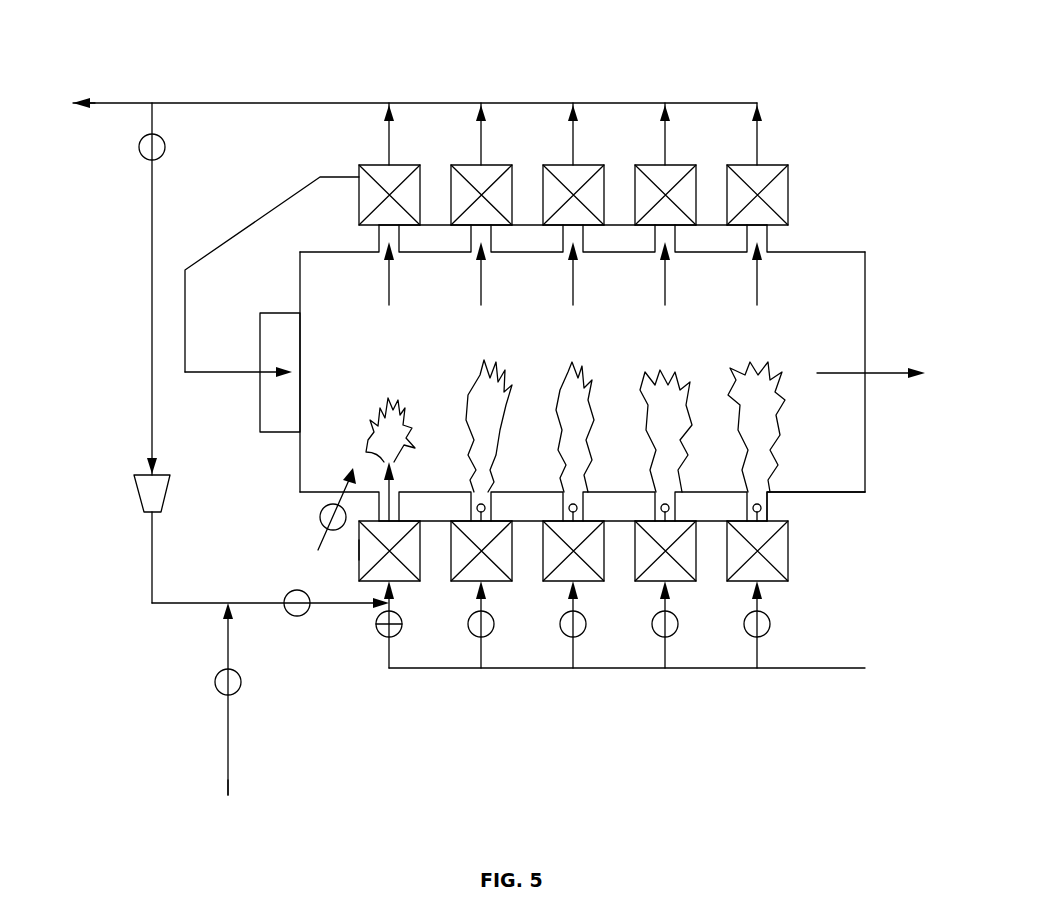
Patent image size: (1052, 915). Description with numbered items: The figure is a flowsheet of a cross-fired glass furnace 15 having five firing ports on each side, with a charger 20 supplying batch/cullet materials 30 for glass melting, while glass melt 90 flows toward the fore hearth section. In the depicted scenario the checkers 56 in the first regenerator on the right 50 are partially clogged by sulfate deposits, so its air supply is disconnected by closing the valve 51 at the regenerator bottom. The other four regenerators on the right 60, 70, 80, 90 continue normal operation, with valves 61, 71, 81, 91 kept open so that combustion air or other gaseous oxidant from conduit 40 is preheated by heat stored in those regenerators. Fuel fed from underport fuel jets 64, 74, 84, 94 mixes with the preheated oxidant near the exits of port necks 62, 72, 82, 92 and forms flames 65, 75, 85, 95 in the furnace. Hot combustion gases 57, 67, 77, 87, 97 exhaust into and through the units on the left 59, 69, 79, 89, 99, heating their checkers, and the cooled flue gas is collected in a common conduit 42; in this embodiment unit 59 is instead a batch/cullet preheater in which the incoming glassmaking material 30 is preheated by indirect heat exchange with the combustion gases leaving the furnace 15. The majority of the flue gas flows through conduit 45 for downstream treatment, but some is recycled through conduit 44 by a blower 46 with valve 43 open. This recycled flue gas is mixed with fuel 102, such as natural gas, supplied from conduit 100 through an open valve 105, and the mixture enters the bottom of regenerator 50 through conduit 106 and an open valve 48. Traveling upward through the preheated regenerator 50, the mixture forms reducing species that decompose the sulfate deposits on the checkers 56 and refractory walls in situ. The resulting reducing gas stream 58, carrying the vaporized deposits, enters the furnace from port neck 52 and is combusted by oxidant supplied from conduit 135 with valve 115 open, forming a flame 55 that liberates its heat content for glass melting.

The cross-fired glass furnace 15 is at (870, 278).
The charger 20 is at (277, 313).
The batch/cullet materials 30 is at (211, 372).
The conduit 40 is at (808, 668).
The common conduit 42 is at (356, 103).
The valve 43 is at (165, 147).
The conduit 44 is at (153, 223).
The conduit 45 is at (118, 103).
The blower 46 is at (165, 539).
The valve 48 is at (306, 614).
The first regenerator on the right 50 is at (418, 568).
The valve 51 is at (402, 624).
The port neck 52 is at (403, 503).
The flame 55 is at (412, 402).
The checkers 56 is at (368, 549).
The hot combustion gases 57 is at (390, 284).
The reducing gas stream 58 is at (405, 491).
The batch/cullet preheater 59 is at (358, 194).
The regenerator on the right 60 is at (511, 568).
The valve 61 is at (494, 620).
The port neck 62 is at (494, 506).
The underport fuel jet 64 is at (484, 523).
The flame 65 is at (520, 395).
The hot combustion gases 67 is at (482, 284).
The regenerator on the left 69 is at (450, 196).
The regenerator on the right 70 is at (603, 568).
The valve 71 is at (586, 620).
The port neck 72 is at (586, 506).
The underport fuel jet 74 is at (576, 523).
The flame 75 is at (603, 395).
The hot combustion gases 77 is at (574, 284).
The regenerator on the left 79 is at (542, 196).
The regenerator on the right 80 is at (695, 568).
The valve 81 is at (678, 620).
The port neck 82 is at (678, 506).
The underport fuel jet 84 is at (668, 523).
The flame 85 is at (690, 395).
The hot combustion gases 87 is at (666, 284).
The regenerator on the left 89 is at (634, 196).
The regenerator on the right / glass melt 90 is at (787, 568).
The valve 91 is at (770, 620).
The port neck 92 is at (771, 506).
The underport fuel jet 94 is at (760, 523).
The flame 95 is at (790, 392).
The hot combustion gases 97 is at (758, 284).
The regenerator on the left 99 is at (726, 194).
The conduit 100 is at (229, 715).
The fuel 102 is at (250, 790).
The valve 105 is at (242, 680).
The conduit 106 is at (263, 592).
The valve 115 is at (321, 514).
The conduit 135 is at (319, 539).